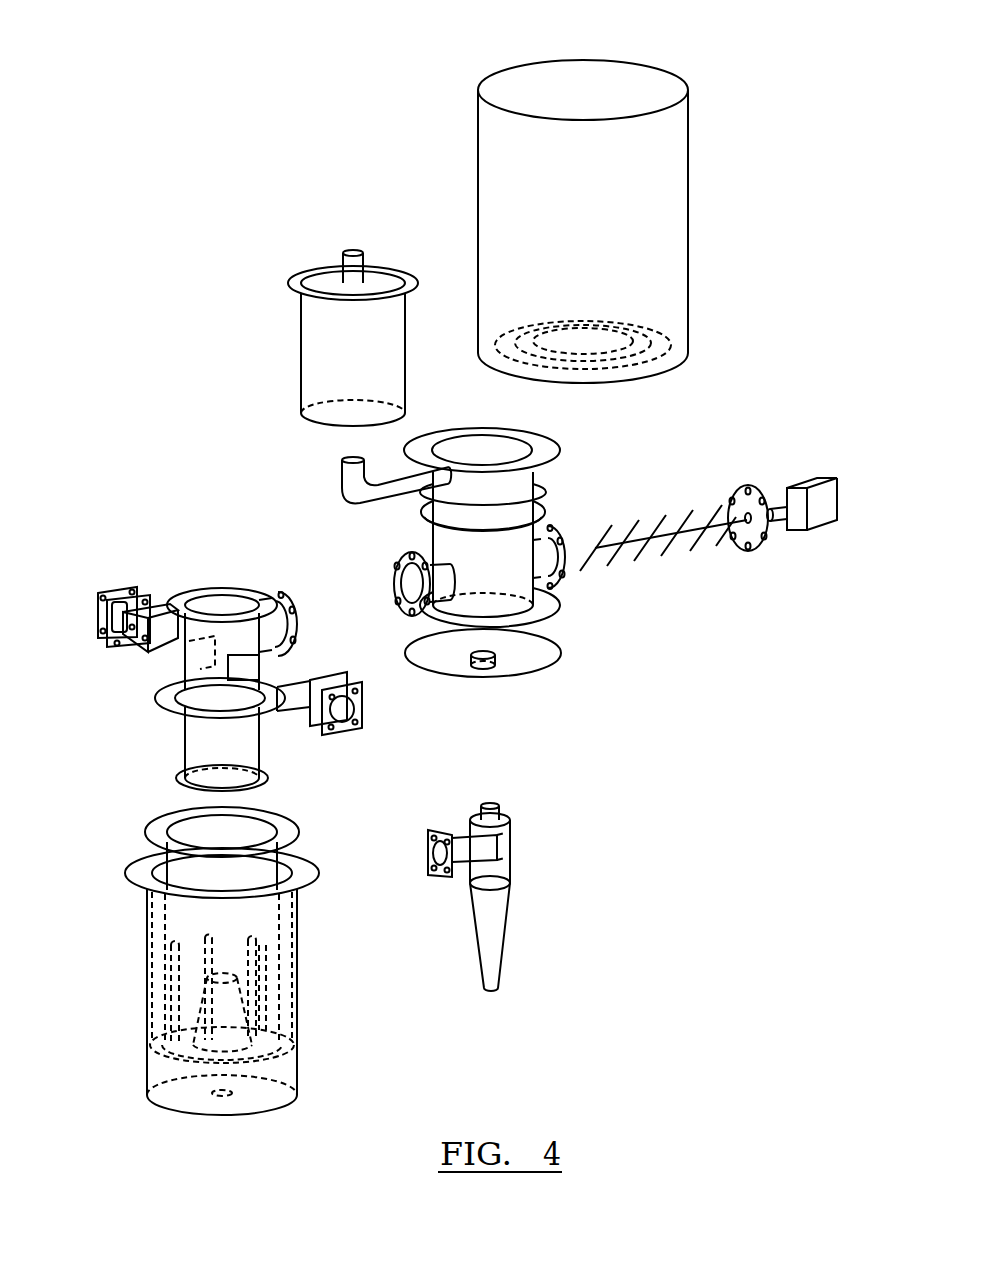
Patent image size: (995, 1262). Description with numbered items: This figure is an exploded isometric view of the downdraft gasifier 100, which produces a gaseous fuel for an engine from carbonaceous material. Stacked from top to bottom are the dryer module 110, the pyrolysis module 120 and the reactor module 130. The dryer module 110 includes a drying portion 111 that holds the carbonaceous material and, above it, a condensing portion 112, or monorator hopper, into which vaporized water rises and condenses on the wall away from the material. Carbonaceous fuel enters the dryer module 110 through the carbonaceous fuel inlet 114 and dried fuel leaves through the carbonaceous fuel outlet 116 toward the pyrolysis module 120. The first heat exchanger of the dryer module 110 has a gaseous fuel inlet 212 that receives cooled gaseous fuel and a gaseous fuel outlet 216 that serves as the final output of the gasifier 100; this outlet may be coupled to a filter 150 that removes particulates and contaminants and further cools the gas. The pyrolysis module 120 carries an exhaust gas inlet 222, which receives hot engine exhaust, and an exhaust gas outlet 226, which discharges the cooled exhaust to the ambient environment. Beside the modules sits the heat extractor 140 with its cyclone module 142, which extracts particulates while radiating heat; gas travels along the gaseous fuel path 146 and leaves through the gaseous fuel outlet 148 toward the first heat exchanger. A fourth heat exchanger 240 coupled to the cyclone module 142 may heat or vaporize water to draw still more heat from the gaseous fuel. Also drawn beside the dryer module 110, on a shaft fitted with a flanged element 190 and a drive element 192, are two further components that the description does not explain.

The downdraft gasifier 100 is at (231, 137).
The dryer module 110 is at (566, 368).
The drying portion 111 is at (518, 683).
The condensing portion 112 is at (555, 72).
The carbonaceous fuel inlet 114 is at (394, 577).
The carbonaceous fuel outlet 116 is at (561, 542).
The pyrolysis module 120 is at (233, 654).
The reactor module 130 is at (85, 820).
The heat extractor 140 is at (518, 873).
The cyclone module 142 is at (437, 880).
The gaseous fuel path 146 is at (506, 880).
The gaseous fuel outlet 148 is at (491, 803).
The filter 150 is at (301, 348).
The mounting flange 190 is at (751, 552).
The motor 192 is at (797, 468).
The gaseous fuel inlet 212 is at (496, 653).
The gaseous fuel outlet 216 is at (342, 470).
The exhaust gas inlet 222 is at (123, 587).
The exhaust gas outlet 226 is at (363, 712).
The fourth heat exchanger 240 is at (462, 848).